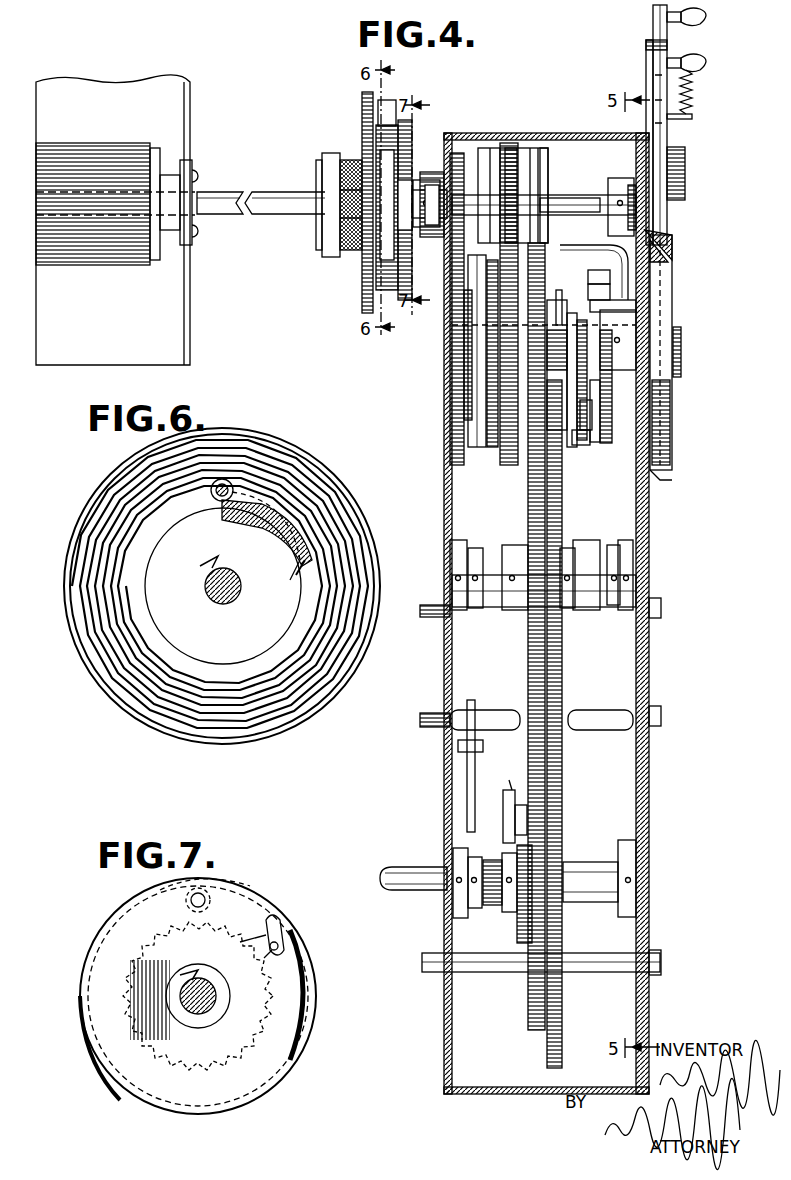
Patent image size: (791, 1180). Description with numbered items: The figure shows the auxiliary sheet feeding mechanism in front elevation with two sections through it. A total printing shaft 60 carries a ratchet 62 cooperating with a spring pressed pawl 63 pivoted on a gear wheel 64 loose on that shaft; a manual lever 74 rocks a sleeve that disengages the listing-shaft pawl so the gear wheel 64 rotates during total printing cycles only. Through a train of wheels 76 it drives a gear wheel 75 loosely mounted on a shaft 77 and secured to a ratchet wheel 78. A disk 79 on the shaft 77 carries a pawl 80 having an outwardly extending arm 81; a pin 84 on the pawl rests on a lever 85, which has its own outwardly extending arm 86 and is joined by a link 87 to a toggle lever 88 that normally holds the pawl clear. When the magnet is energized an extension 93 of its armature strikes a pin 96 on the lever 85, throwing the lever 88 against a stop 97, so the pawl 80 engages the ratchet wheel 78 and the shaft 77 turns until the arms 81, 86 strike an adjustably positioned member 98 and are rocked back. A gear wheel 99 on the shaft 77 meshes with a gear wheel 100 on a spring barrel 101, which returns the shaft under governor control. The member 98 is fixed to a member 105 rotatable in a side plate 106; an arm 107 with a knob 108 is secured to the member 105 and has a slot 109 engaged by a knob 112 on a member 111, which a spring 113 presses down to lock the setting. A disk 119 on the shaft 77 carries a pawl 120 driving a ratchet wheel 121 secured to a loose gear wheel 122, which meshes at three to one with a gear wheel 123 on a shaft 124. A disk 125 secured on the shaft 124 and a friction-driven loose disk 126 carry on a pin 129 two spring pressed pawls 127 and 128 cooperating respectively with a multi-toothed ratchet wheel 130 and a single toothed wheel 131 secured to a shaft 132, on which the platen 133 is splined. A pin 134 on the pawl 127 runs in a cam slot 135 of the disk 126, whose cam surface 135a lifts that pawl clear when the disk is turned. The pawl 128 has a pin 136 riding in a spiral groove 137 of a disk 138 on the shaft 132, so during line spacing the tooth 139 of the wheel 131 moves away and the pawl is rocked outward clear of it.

In FIG. 4, the total printing shaft 60 is at (408, 873).
In FIG. 4, the ratchet 62 is at (517, 930).
In FIG. 4, the spring pressed pawl 63 is at (508, 815).
In FIG. 4, the gear wheel 64 is at (555, 768).
In FIG. 4, the manual lever 74 is at (467, 802).
In FIG. 4, the gear wheel 75 is at (535, 440).
In FIG. 4, the train of wheels 76 is at (562, 712).
In FIG. 4, the shaft 77 is at (682, 346).
In FIG. 4, the ratchet wheel 78 is at (592, 445).
In FIG. 4, the disk 79 is at (606, 445).
In FIG. 4, the pawl 80 is at (610, 292).
In FIG. 4, the outwardly extending arm 81 is at (660, 240).
In FIG. 4, the pin 84 is at (610, 276).
In FIG. 4, the lever 85 is at (625, 305).
In FIG. 4, the outwardly extending arm 86 is at (580, 300).
In FIG. 4, the link 87 is at (580, 410).
In FIG. 4, the lever 88 is at (580, 440).
In FIG. 4, the extension 93 is at (562, 250).
In FIG. 4, the pin 96 is at (668, 255).
In FIG. 4, the stop 97 is at (587, 447).
In FIG. 4, the member 98 is at (600, 198).
In FIG. 4, the gear wheel 99 is at (497, 447).
In FIG. 4, the gear wheel 100 is at (520, 150).
In FIG. 4, the spring barrel 101 is at (548, 150).
In FIG. 4, the member 105 is at (674, 458).
In FIG. 4, the side plate 106 is at (650, 505).
In FIG. 4, the arm 107 is at (660, 210).
In FIG. 4, the knob 108 is at (705, 18).
In FIG. 4, the slot 109 is at (650, 48).
In FIG. 4, the member 111 is at (650, 80).
In FIG. 4, the knob 112 is at (705, 66).
In FIG. 4, the spring 113 is at (694, 94).
In FIG. 4, the disk 119 is at (466, 395).
In FIG. 4, the pawl 120 is at (446, 325).
In FIG. 4, the ratchet wheel 121 is at (452, 410).
In FIG. 4, the gear wheel 122 is at (470, 330).
In FIG. 4, the gear wheel 123 is at (500, 150).
In FIG. 4, the shaft 124 is at (565, 198).
In FIG. 6, the shaft 124 is at (205, 590).
In FIG. 7, the shaft 124 is at (182, 1000).
In FIG. 4, the disk 125 is at (412, 130).
In FIG. 7, the disk 125 is at (165, 1100).
In FIG. 4, the disk 126 is at (412, 145).
In FIG. 7, the disk 126 is at (262, 1064).
In FIG. 4, the pawl 127 is at (378, 122).
In FIG. 7, the pawl 127 is at (260, 890).
In FIG. 4, the pawl 128 is at (376, 128).
In FIG. 6, the pawl 128 is at (302, 562).
In FIG. 6, the pin 129 is at (225, 485).
In FIG. 7, the pin 129 is at (200, 880).
In FIG. 4, the multi-toothed ratchet wheel 130 is at (368, 268).
In FIG. 7, the multi-toothed ratchet wheel 130 is at (128, 1000).
In FIG. 4, the single toothed wheel 131 is at (362, 252).
In FIG. 6, the single toothed wheel 131 is at (262, 655).
In FIG. 4, the shaft 132 is at (270, 214).
In FIG. 4, the platen 133 is at (96, 248).
In FIG. 7, the pin 134 is at (280, 950).
In FIG. 7, the cam slot 135 is at (282, 928).
In FIG. 7, the cam surface 135a is at (262, 934).
In FIG. 6, the pin 136 is at (300, 512).
In FIG. 6, the spiral groove 137 is at (337, 634).
In FIG. 4, the disk 138 is at (366, 300).
In FIG. 6, the disk 138 is at (330, 692).
In FIG. 6, the tooth 139 is at (290, 572).